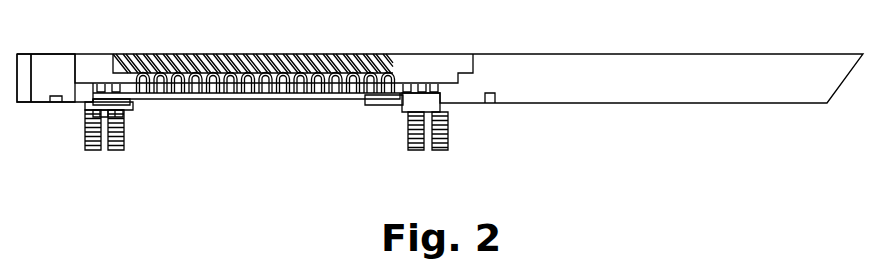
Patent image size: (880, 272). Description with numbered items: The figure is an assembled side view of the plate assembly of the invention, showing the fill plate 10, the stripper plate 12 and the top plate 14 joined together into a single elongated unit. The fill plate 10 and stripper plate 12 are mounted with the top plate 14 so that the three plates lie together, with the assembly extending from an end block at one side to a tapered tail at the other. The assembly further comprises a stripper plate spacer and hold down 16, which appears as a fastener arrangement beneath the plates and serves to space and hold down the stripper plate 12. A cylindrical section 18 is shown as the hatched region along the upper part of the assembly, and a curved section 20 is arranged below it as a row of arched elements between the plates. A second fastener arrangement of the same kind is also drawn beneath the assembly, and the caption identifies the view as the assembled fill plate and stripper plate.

The fill plate 10 is at (97, 55).
The stripper plate 12 is at (375, 102).
The top plate 14 is at (55, 56).
The stripper plate spacer and hold down 16 is at (127, 93).
The cylindrical section 18 is at (377, 55).
The curved section 20 is at (265, 88).